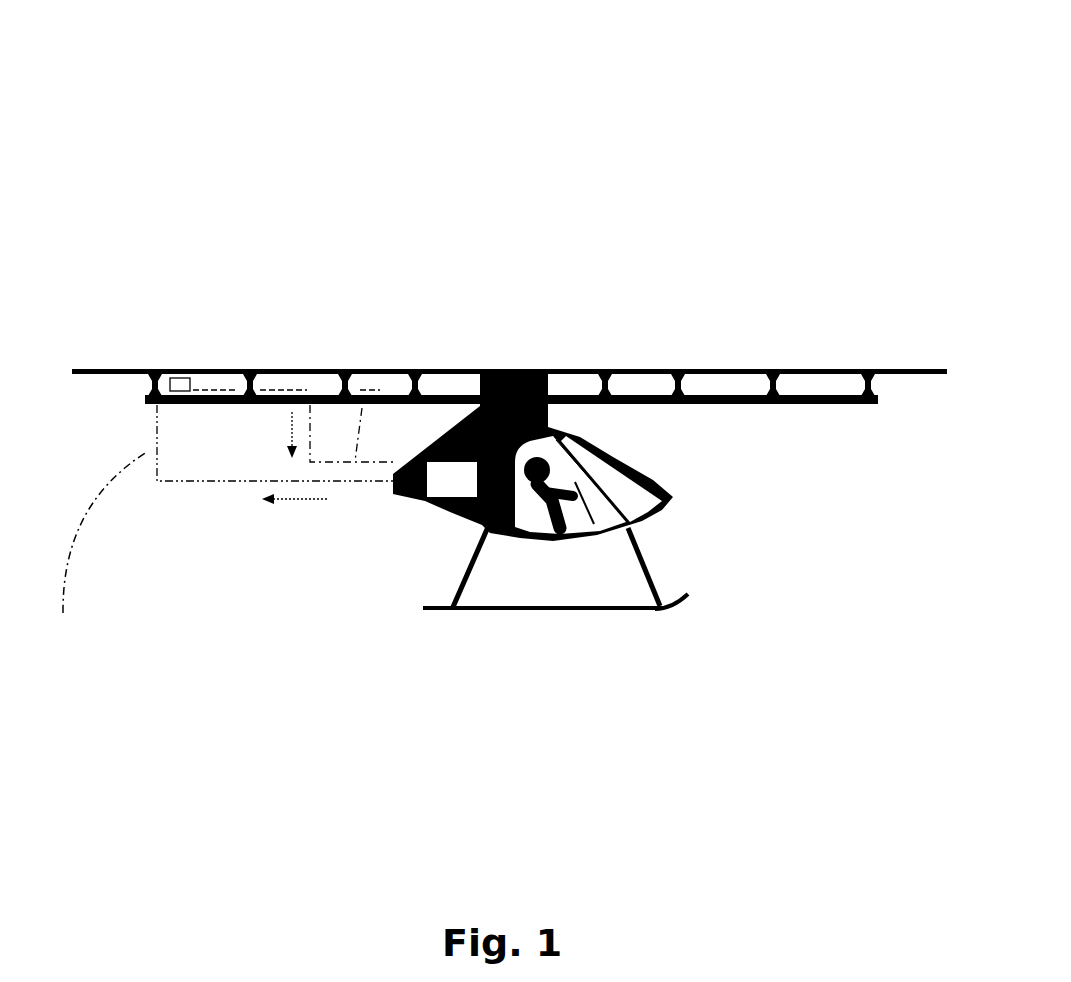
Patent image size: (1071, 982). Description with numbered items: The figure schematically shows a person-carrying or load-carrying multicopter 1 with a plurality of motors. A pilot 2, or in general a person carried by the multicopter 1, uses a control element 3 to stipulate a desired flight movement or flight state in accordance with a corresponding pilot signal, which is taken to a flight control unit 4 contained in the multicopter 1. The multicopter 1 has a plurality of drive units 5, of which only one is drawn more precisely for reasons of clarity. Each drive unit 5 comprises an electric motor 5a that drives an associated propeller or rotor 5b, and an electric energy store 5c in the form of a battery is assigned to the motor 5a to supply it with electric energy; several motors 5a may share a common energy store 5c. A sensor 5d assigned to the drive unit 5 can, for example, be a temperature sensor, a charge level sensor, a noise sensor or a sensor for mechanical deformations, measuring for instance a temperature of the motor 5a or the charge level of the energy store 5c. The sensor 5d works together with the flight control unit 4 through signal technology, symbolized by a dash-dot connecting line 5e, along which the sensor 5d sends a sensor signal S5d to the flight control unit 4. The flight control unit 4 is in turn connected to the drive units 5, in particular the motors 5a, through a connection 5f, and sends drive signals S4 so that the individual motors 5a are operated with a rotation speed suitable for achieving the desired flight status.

The multicopter 1 is at (552, 257).
The pilot 2 is at (540, 550).
The control element 3 is at (687, 510).
The flight control unit 4 is at (395, 565).
The drive unit 5 is at (152, 345).
The motor 5a is at (454, 429).
The rotor 5b is at (509, 292).
The electric energy store 5c is at (274, 496).
The sensor 5d is at (275, 323).
The dash-dot connecting line 5e is at (388, 360).
The connection 5f is at (97, 560).
The drive signal S4 is at (297, 500).
The sensor signal S5d is at (291, 430).